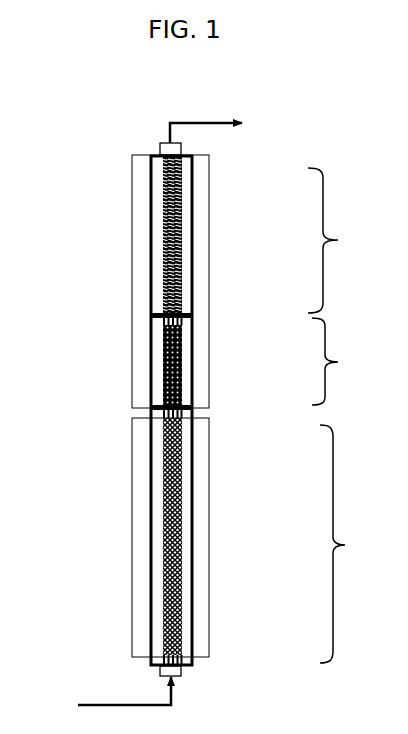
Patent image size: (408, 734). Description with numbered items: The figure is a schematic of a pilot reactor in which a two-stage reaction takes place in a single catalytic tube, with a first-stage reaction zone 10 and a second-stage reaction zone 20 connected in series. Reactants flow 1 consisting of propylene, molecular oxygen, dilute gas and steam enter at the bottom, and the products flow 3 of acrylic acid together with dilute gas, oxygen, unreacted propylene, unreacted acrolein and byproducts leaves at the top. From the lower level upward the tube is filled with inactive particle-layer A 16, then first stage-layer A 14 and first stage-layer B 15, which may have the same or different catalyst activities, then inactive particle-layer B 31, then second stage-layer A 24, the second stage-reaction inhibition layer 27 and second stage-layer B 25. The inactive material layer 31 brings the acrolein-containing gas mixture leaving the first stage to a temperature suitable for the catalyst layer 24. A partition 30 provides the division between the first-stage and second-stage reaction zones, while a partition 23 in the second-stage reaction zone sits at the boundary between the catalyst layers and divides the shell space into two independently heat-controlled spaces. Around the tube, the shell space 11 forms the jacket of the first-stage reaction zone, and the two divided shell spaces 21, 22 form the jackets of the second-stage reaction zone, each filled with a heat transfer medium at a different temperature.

The flow of reactants 1 is at (118, 694).
The flow of products 3 is at (213, 130).
The first-stage reaction zone 10 is at (162, 537).
The shell space (jacket) in the first-stage reaction zone 11 is at (348, 544).
The first stage-layer A 14 is at (162, 637).
The first stage-layer B 15 is at (162, 514).
The inactive particle-layer A 16 is at (182, 656).
The second-stage reaction zone 20 is at (160, 281).
The shell space (jacket) in the second-stage reaction zone 21 is at (339, 361).
The shell space (jacket) in the second-stage reaction zone 22 is at (337, 240).
The partition 23 is at (152, 317).
The second stage-layer A 24 is at (162, 387).
The second stage-layer B 25 is at (162, 260).
The second stage-reaction inhibition layer 27 is at (182, 314).
The partition 30 is at (152, 409).
The inactive particle-layer B 31 is at (182, 420).